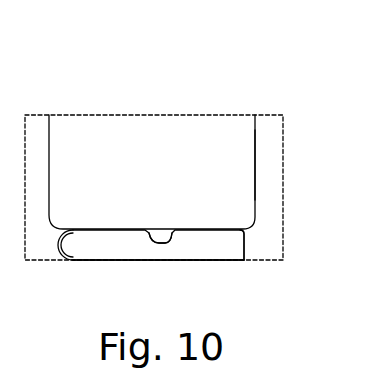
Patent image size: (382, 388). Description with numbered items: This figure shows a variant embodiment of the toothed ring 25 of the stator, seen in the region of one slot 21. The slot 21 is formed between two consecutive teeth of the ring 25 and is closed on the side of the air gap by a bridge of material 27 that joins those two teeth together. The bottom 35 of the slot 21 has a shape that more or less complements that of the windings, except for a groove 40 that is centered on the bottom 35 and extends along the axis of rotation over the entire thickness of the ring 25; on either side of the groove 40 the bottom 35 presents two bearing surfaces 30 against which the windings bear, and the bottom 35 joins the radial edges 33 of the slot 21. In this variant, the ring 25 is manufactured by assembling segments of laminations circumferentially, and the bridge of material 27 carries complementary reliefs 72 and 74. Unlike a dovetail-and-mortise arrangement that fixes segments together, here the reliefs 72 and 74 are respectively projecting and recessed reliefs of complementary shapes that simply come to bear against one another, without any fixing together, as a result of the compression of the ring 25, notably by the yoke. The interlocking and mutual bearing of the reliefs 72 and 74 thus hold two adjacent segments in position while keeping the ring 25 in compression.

The slot 21 is at (210, 123).
The toothed ring 25 is at (268, 133).
The bridge of material 27 is at (200, 247).
The bearing surface 30 is at (103, 228).
The radial edge 33 is at (257, 160).
The bottom of the slot 35 is at (243, 230).
The groove 40 is at (158, 245).
The complementary relief 72 is at (60, 262).
The complementary relief 74 is at (72, 248).